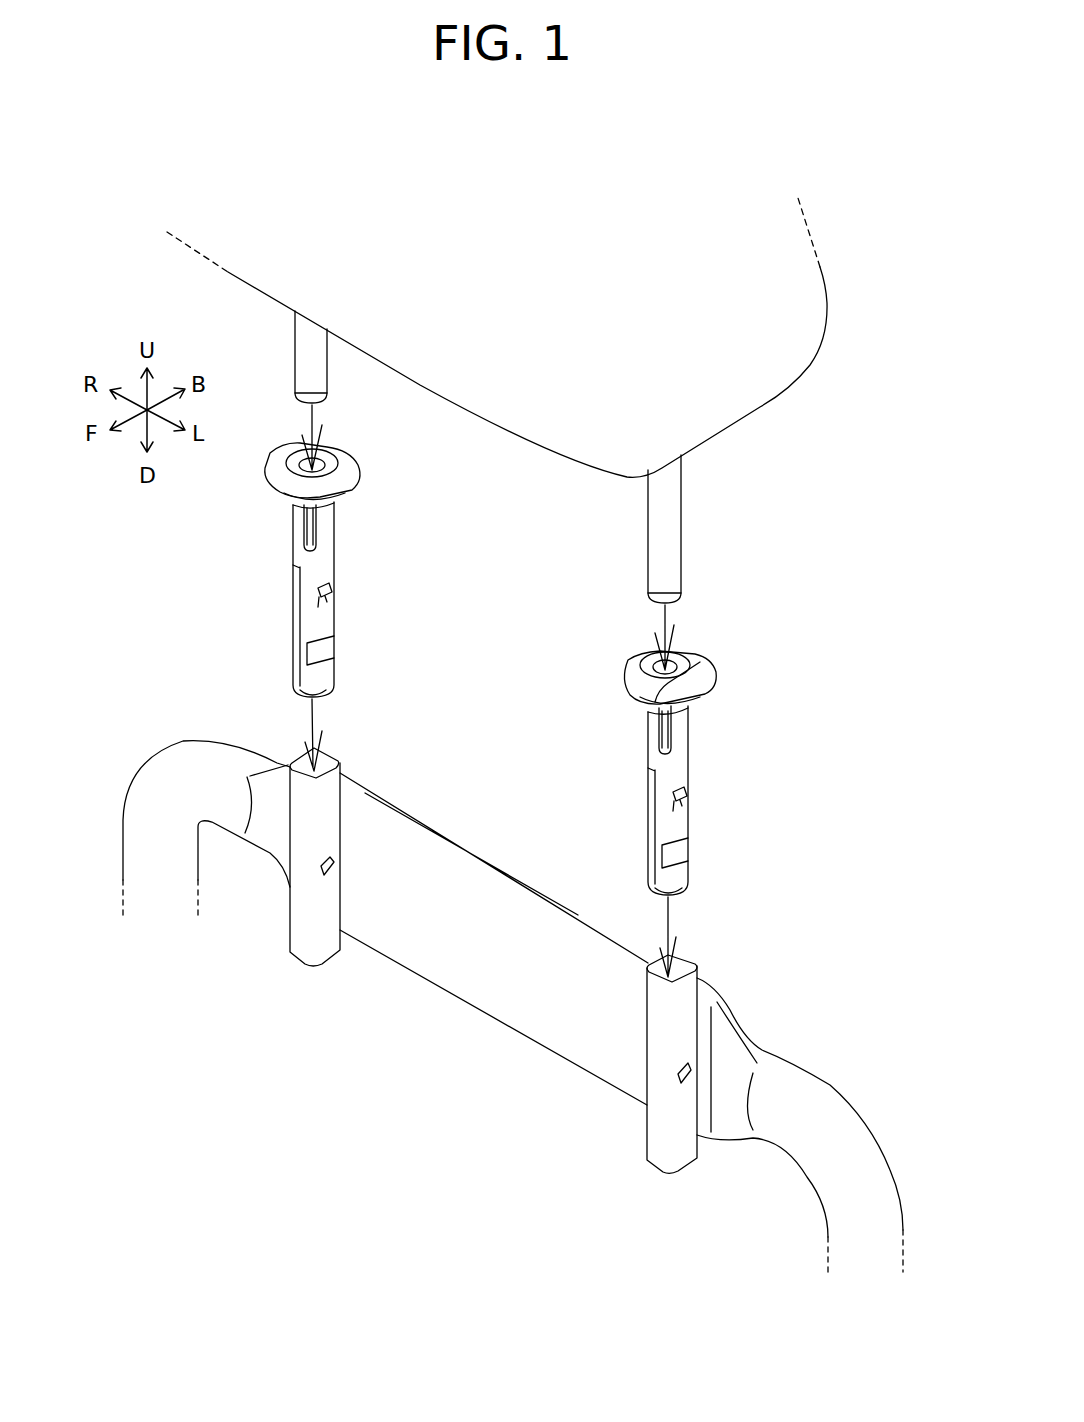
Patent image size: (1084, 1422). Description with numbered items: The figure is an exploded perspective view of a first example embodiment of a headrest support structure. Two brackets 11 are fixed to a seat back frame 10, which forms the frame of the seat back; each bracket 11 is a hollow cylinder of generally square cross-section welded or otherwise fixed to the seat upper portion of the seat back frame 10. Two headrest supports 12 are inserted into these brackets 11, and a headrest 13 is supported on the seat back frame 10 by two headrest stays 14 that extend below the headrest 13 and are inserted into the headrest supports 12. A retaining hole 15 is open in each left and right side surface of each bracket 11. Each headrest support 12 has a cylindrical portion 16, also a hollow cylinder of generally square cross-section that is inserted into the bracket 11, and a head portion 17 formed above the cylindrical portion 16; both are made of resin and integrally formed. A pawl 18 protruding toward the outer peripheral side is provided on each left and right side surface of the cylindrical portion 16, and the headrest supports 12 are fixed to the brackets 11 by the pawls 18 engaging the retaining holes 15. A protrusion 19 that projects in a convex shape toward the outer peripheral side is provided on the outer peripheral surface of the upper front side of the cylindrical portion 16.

The seat back frame 10 is at (789, 1064).
The bracket 11 is at (302, 928).
The headrest support 12 is at (485, 669).
The headrest 13 is at (753, 396).
The headrest stay 14 is at (297, 356).
The retaining hole 15 is at (336, 868).
The cylindrical portion 16 is at (492, 698).
The head portion 17 is at (268, 478).
The pawl 18 is at (334, 598).
The protrusion 19 is at (302, 528).